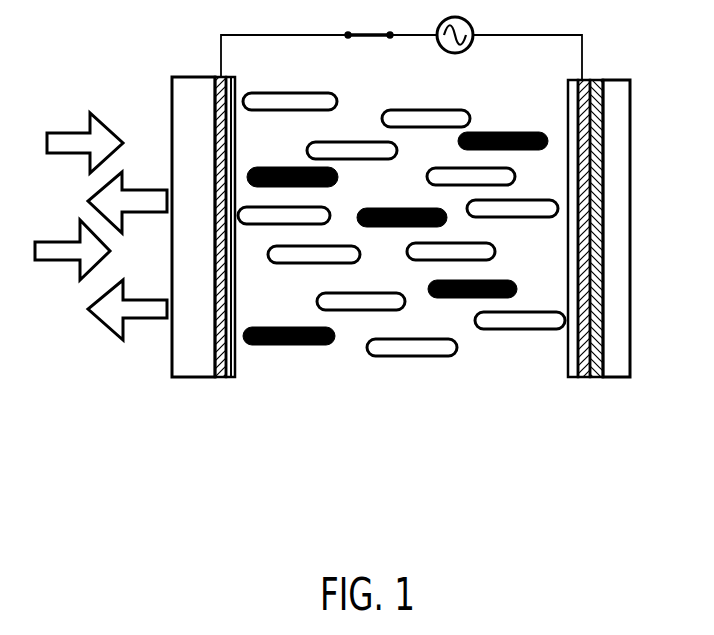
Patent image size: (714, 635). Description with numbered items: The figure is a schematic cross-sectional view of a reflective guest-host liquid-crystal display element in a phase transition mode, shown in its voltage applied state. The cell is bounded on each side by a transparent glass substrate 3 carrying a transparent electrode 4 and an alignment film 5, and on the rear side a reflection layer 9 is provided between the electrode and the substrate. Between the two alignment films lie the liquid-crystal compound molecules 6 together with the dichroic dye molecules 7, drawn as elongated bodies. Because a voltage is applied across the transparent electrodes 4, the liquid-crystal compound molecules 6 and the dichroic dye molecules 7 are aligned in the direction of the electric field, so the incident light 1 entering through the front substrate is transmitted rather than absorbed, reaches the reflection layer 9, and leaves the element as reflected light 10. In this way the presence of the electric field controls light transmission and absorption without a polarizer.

The incident light 1 is at (50, 262).
The transparent glass substrate 3 is at (190, 378).
The transparent electrode 4 is at (217, 378).
The alignment film 5 is at (237, 378).
The liquid-crystal compound molecule 6 is at (300, 345).
The dichroic dye molecule 7 is at (406, 356).
The reflection layer 9 is at (596, 378).
The reflected light 10 is at (137, 320).